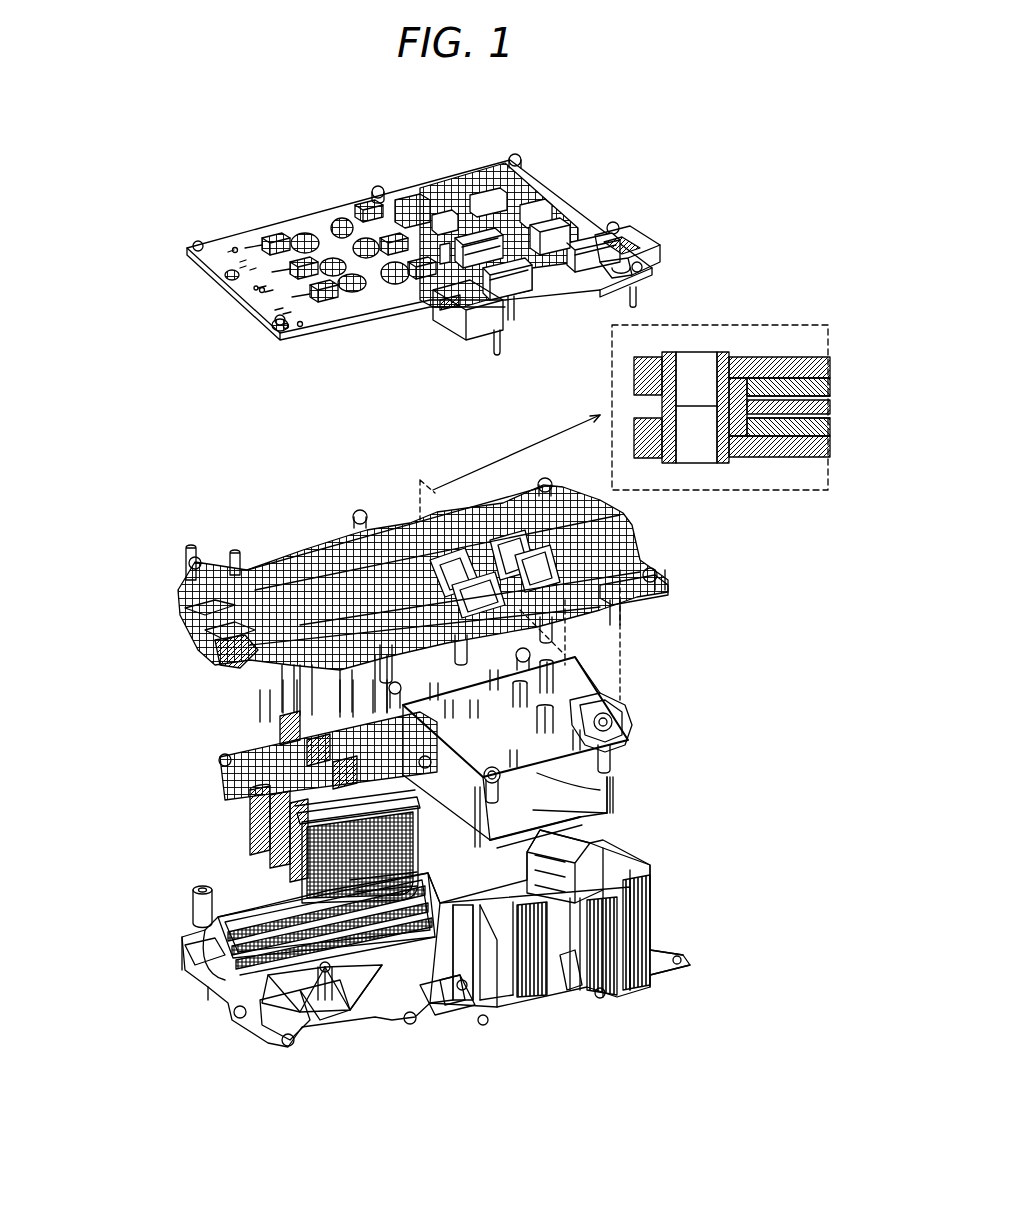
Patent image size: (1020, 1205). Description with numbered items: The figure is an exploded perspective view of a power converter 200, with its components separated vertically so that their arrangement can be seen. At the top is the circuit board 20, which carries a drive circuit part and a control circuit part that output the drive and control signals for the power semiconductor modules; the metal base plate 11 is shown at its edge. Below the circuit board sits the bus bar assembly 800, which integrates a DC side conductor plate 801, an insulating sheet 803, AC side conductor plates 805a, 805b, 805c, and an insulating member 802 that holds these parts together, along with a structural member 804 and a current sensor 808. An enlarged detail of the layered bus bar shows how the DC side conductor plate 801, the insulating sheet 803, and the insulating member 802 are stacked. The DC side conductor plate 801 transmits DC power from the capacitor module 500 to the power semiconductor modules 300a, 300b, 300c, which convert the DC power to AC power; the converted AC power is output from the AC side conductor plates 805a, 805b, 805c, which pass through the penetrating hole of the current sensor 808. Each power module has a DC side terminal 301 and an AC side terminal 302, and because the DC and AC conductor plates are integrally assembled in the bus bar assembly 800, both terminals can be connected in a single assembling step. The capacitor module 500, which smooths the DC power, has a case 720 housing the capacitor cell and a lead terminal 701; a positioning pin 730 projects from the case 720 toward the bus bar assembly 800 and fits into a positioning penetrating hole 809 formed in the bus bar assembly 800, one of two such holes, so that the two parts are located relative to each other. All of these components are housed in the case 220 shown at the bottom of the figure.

The power converter 200 is at (225, 197).
The circuit board 20 is at (535, 185).
The metal base plate 11 is at (640, 240).
The insulating member 802 is at (758, 355).
The DC side conductor plate 801 is at (816, 346).
The insulating sheet 803 is at (760, 460).
The structural member 804 is at (668, 405).
The bus bar assembly 800 is at (330, 480).
The current sensor 808 is at (215, 560).
The AC side conductor plate 805a is at (190, 615).
The AC side conductor plate 805b is at (210, 640).
The AC side conductor plate 805c is at (230, 665).
The positioning penetrating hole 809 is at (625, 605).
The AC side terminal 302 is at (285, 705).
The DC side terminal 301 is at (270, 742).
The power semiconductor module 300a is at (250, 825).
The power semiconductor module 300b is at (270, 860).
The power semiconductor module 300c is at (300, 895).
The capacitor module 500 is at (620, 712).
The positioning pin 730 is at (625, 735).
The lead terminal 701 is at (610, 775).
The case 720 is at (580, 822).
The case 220 is at (660, 883).